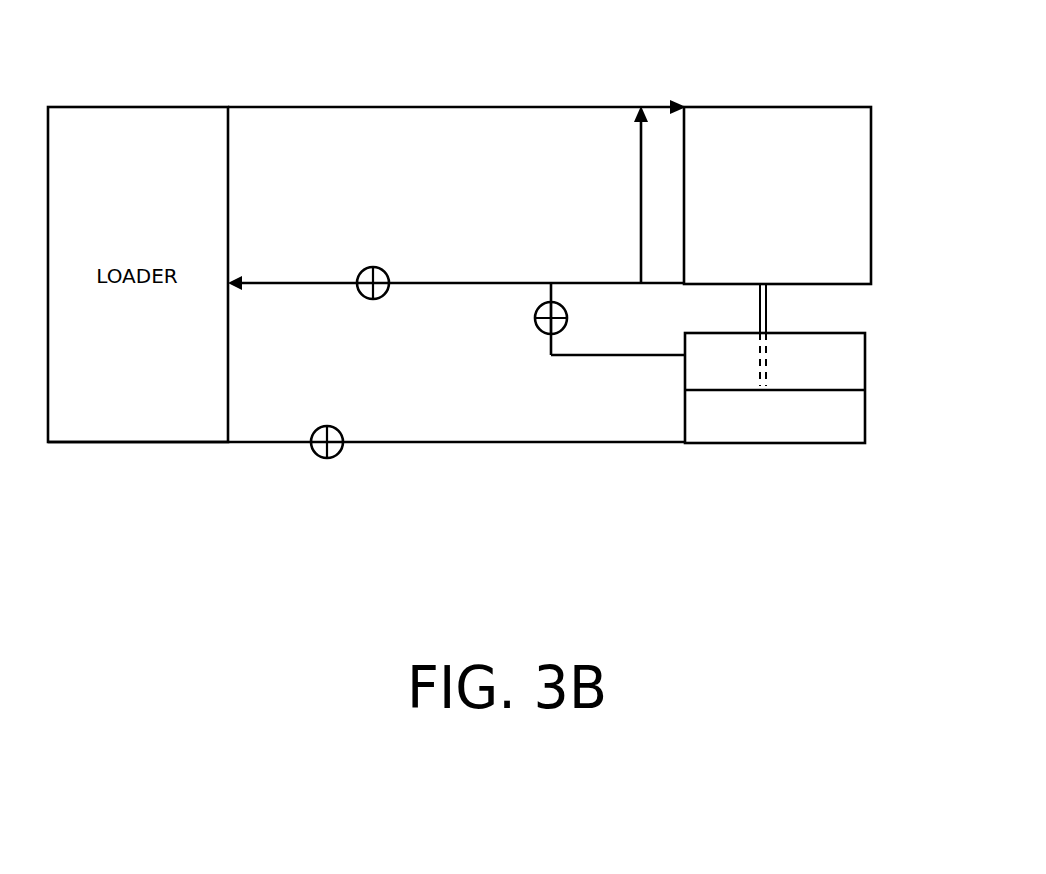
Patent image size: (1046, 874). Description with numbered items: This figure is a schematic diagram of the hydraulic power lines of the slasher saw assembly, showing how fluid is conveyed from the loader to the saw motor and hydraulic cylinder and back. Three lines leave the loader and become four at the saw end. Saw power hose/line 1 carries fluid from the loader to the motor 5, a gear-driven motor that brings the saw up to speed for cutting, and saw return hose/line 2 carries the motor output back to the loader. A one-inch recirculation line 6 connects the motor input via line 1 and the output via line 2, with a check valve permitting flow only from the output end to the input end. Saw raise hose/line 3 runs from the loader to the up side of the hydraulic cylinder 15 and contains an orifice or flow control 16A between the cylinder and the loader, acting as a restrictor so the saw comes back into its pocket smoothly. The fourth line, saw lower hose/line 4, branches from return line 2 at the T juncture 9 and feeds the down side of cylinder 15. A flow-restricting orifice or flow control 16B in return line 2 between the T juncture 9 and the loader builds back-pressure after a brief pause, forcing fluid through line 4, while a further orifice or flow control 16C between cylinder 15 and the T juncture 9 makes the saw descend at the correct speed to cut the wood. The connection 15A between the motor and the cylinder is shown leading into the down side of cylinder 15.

The saw power hose/line 1 is at (425, 100).
The saw return hose/line 2 is at (436, 276).
The saw raise hose/line 3 is at (448, 446).
The saw lower hose/line 4 is at (611, 359).
The motor 5 is at (777, 195).
The recirculation line 6 is at (640, 157).
The T juncture 9 is at (553, 280).
The hydraulic cylinder 15 is at (882, 388).
The transfer path 15A is at (768, 327).
The orifice or flow control 16A is at (328, 426).
The orifice or flow control 16B is at (378, 267).
The orifice or flow control 16C is at (531, 329).